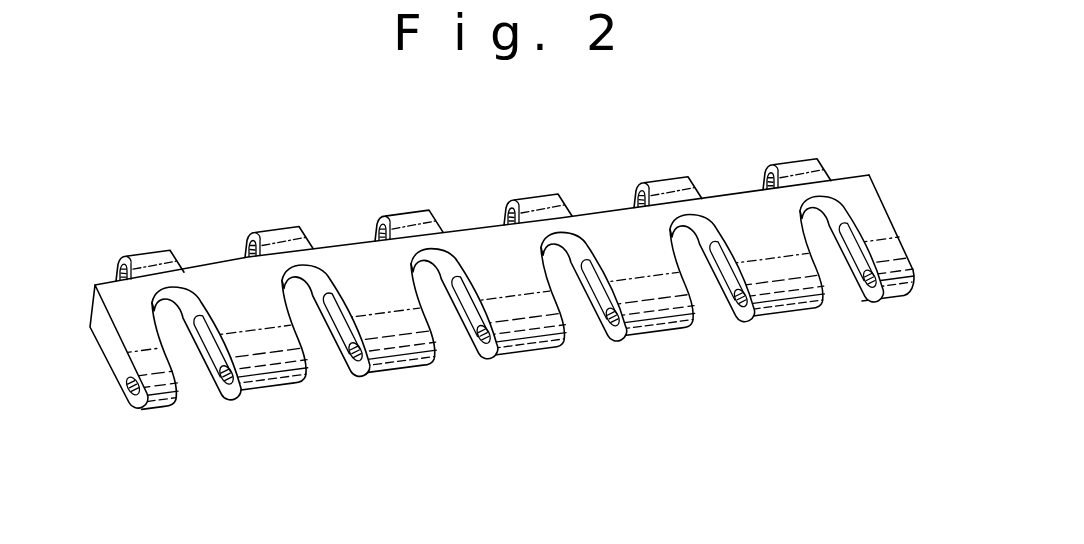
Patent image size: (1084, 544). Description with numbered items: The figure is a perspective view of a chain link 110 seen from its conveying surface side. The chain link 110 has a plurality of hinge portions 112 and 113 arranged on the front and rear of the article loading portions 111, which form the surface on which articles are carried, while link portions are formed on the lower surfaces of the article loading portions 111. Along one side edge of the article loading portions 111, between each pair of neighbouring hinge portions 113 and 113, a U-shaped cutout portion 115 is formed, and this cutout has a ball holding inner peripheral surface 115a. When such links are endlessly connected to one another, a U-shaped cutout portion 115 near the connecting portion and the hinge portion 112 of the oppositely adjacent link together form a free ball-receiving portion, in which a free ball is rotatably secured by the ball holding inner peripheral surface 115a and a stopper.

The chain link 110 is at (467, 180).
The article loading portion 111 is at (367, 273).
The hinge portion 112 is at (275, 243).
The hinge portion 113 is at (408, 363).
The U-shaped cutout portion 115 is at (700, 240).
The ball holding inner peripheral surface 115a is at (727, 297).